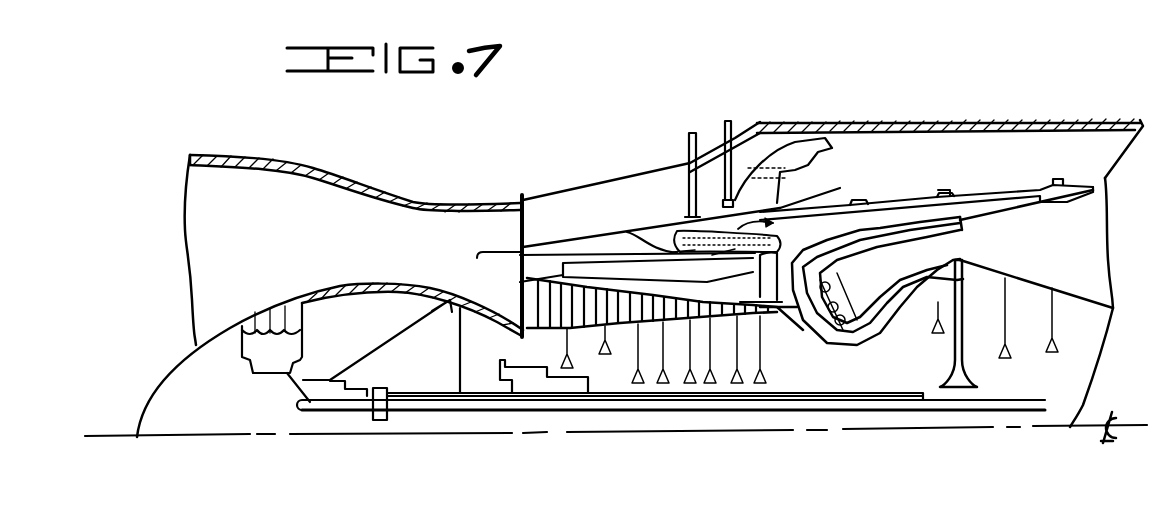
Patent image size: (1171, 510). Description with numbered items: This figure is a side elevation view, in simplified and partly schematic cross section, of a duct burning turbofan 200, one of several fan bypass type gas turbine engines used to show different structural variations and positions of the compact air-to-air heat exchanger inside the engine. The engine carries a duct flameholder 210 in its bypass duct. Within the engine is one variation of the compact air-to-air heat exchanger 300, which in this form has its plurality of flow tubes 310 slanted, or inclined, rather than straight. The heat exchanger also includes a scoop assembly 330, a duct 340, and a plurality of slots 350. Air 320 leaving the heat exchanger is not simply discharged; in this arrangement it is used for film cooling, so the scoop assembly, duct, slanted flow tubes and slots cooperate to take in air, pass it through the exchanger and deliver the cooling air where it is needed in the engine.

The duct burning turbofan 200 is at (873, 111).
The duct flameholder 210 is at (775, 156).
The compact air-to-air heat exchanger 300 is at (668, 238).
The flow tubes 310 is at (690, 231).
The air 320 is at (778, 225).
The scoop assembly 330 is at (627, 232).
The duct 340 is at (828, 197).
The slots 350 is at (783, 203).